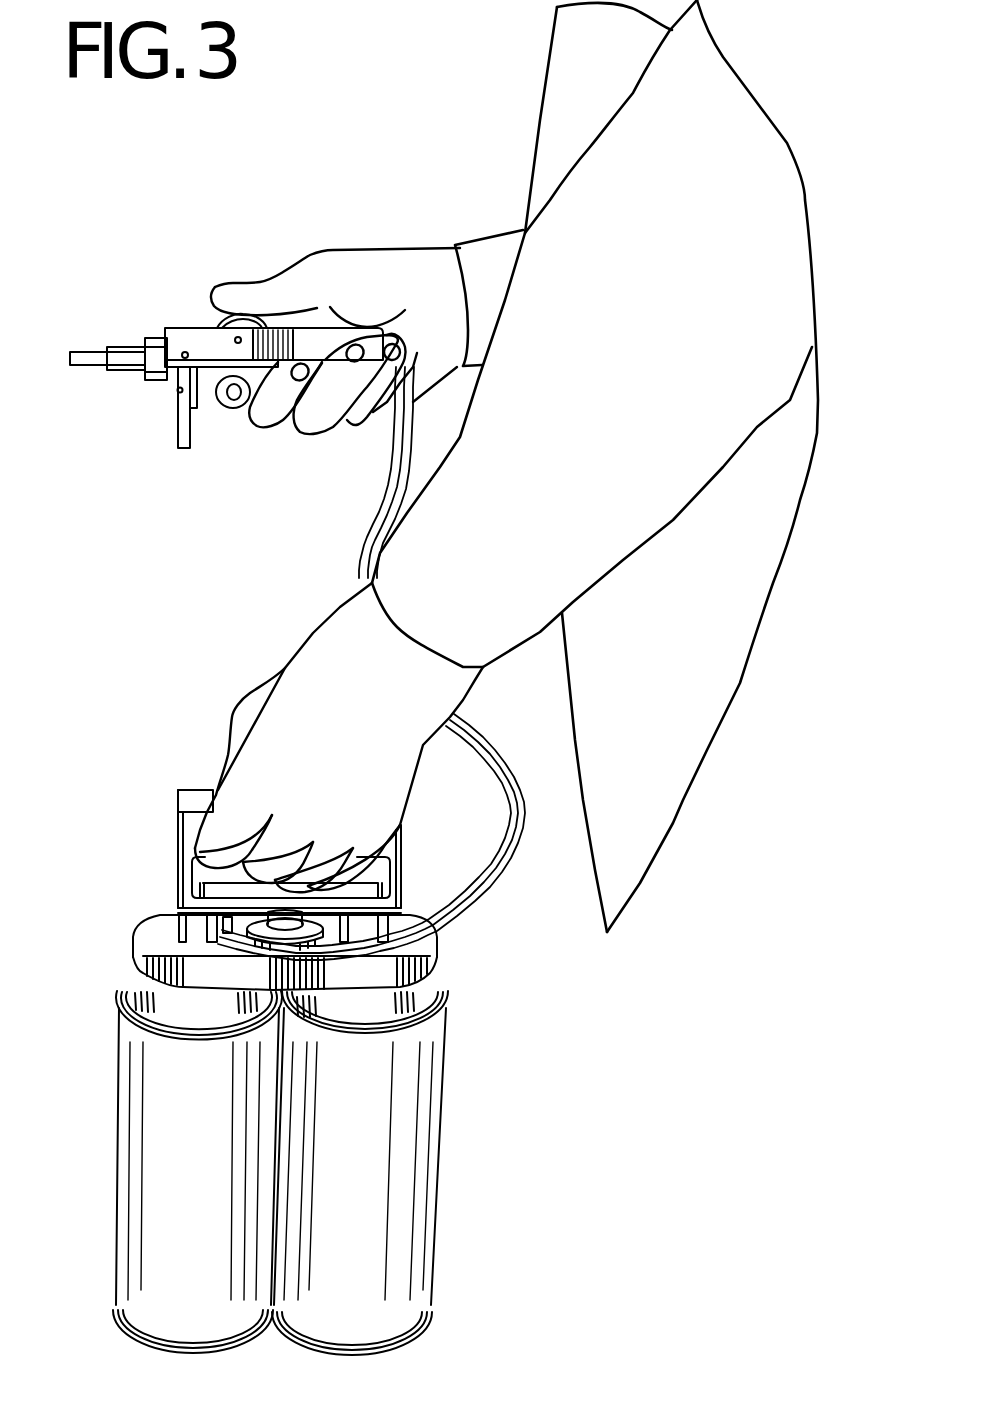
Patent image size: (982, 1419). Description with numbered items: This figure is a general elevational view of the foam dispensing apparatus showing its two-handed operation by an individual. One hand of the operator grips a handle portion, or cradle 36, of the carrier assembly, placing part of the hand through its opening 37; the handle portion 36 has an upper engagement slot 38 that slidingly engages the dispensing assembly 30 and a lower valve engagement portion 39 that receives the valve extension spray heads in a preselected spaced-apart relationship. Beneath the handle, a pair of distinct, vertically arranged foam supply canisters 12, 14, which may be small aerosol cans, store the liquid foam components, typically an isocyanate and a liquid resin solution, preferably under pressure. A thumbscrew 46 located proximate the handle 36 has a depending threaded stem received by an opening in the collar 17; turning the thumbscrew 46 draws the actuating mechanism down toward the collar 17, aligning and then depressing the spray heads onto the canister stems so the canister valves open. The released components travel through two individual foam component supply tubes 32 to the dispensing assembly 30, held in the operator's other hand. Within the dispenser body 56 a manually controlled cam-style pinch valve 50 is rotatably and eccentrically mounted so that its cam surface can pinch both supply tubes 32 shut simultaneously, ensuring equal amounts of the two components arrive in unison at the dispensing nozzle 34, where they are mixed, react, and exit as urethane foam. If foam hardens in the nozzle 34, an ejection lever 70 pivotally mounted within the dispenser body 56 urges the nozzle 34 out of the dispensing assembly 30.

The foam supply canister 12 is at (172, 1138).
The foam supply canister 14 is at (366, 1173).
The collar 17 is at (147, 977).
The dispensing assembly 30 is at (220, 381).
The foam component supply tube 32 is at (372, 532).
The dispensing nozzle 34 is at (122, 372).
The handle portion (cradle) 36 is at (178, 825).
The opening 37 is at (208, 878).
The upper engagement slot 38 is at (195, 797).
The lower valve engagement portion 39 is at (178, 903).
The thumbscrew 46 is at (313, 945).
The cam-style pinch valve 50 is at (223, 320).
The dispenser body 56 is at (176, 334).
The ejection lever 70 is at (184, 432).